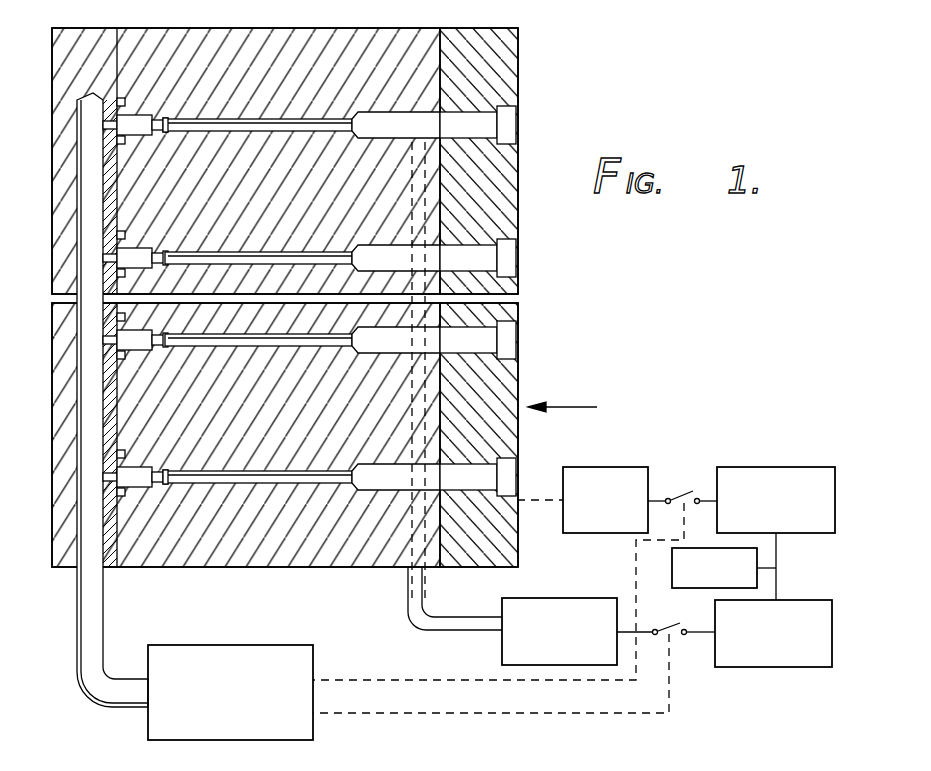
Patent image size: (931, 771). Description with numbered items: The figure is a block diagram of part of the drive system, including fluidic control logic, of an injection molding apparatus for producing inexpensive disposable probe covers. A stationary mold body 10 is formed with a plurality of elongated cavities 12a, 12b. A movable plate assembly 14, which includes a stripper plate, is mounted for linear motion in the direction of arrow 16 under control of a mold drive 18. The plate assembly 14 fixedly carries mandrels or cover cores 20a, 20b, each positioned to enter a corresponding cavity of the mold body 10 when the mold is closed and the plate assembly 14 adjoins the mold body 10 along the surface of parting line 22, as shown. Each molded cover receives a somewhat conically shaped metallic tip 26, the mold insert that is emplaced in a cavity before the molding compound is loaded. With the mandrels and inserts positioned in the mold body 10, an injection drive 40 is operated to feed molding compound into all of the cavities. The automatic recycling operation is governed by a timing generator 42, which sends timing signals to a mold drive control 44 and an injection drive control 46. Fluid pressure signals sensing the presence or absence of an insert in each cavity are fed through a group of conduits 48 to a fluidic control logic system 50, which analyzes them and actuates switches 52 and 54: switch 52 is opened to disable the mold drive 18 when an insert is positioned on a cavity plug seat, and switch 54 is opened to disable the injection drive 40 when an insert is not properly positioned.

The stationary mold body 10 is at (218, 563).
The movable plate assembly 14 is at (517, 548).
The elongated cavity 12a is at (240, 252).
The elongated cavity 12b is at (241, 114).
The cover core 20a is at (352, 491).
The cover core 20b is at (373, 113).
The metallic tip 26 is at (168, 133).
The arrow 16 is at (571, 407).
The mold drive 18 is at (602, 467).
The parting line 22 is at (437, 590).
The injection drive 40 is at (553, 598).
The timing generator 42 is at (685, 589).
The mold drive control 44 is at (784, 467).
The injection drive control 46 is at (762, 667).
The conduits 48 is at (105, 608).
The fluidic control logic system 50 is at (282, 645).
The switch 52 is at (693, 491).
The switch 54 is at (680, 623).